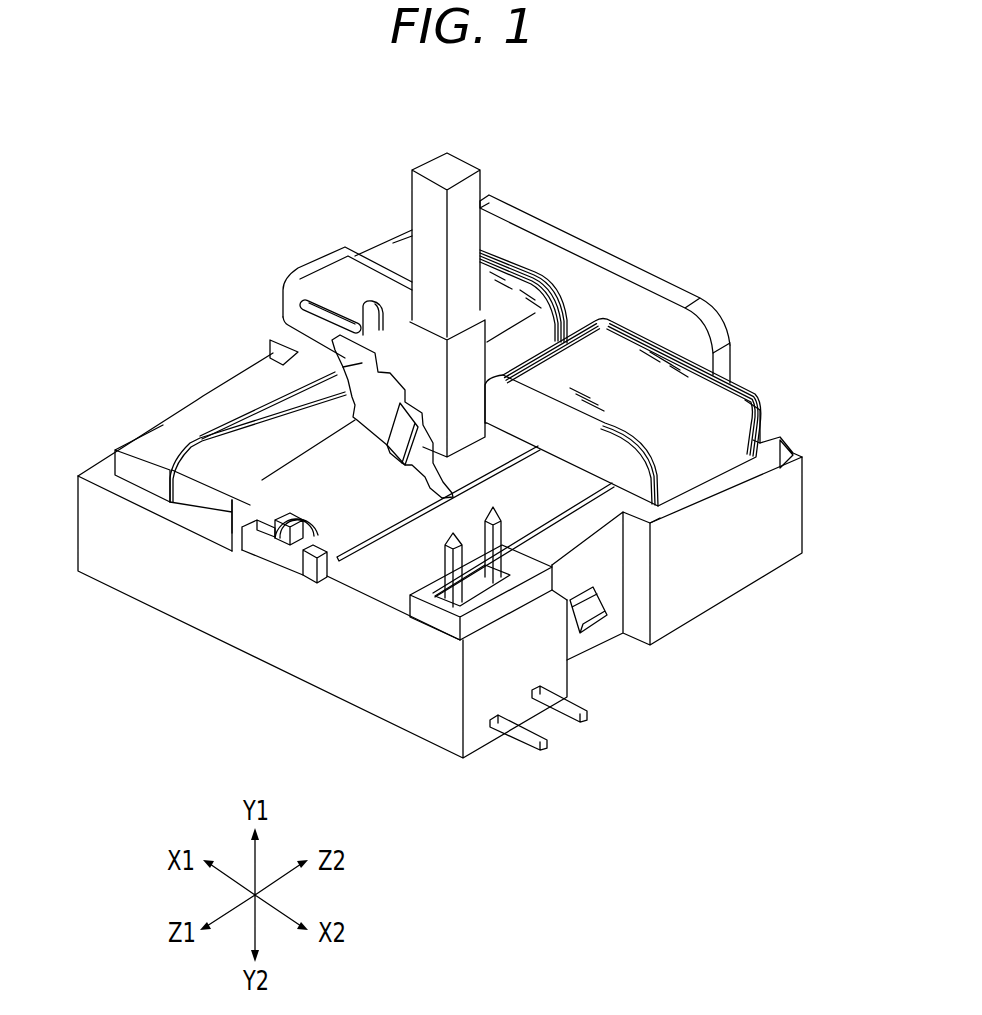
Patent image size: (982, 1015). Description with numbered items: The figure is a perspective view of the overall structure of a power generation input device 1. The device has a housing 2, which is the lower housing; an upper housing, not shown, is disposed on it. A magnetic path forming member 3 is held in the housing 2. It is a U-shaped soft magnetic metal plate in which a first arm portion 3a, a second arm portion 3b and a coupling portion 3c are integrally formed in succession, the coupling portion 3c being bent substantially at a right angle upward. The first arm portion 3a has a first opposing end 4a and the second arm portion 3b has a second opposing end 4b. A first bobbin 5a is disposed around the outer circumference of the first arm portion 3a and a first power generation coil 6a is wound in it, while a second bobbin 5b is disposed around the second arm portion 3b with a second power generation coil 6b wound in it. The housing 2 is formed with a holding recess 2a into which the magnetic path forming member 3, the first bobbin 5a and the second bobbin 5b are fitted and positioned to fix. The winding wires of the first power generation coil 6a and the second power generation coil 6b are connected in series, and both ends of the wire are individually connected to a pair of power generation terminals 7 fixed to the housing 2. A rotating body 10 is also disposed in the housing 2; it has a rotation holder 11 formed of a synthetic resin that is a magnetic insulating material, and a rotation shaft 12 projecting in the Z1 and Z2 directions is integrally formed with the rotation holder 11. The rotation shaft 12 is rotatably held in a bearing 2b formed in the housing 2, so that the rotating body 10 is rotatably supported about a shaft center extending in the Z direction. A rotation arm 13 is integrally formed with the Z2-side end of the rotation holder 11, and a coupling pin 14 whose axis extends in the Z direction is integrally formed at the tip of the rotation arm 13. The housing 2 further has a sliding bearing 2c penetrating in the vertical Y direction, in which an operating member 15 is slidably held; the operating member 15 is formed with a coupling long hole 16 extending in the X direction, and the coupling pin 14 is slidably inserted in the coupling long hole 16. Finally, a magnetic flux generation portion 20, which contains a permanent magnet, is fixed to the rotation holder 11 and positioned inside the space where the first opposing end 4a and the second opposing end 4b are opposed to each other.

The power generation input device 1 is at (745, 313).
The housing 2 is at (787, 515).
The holding recess 2a is at (242, 417).
The bearing 2b is at (260, 527).
The sliding bearing 2c is at (478, 446).
The magnetic path forming member 3 is at (668, 268).
The first arm portion 3a is at (400, 522).
The second arm portion 3b is at (222, 482).
The coupling portion 3c is at (598, 257).
The first opposing end 4a is at (393, 513).
The second opposing end 4b is at (113, 443).
The first bobbin 5a is at (742, 385).
The second bobbin 5b is at (508, 263).
The first power generation coil 6a is at (693, 447).
The second power generation coil 6b is at (393, 256).
The power generation terminals 7 is at (578, 722).
The rotating body 10 is at (232, 527).
The rotation holder 11 is at (323, 545).
The rotation shaft 12 is at (285, 533).
The rotation arm 13 is at (307, 353).
The coupling pin 14 is at (350, 327).
The operating member 15 is at (452, 168).
The coupling long hole 16 is at (313, 312).
The magnetic flux generation portion 20 is at (298, 465).